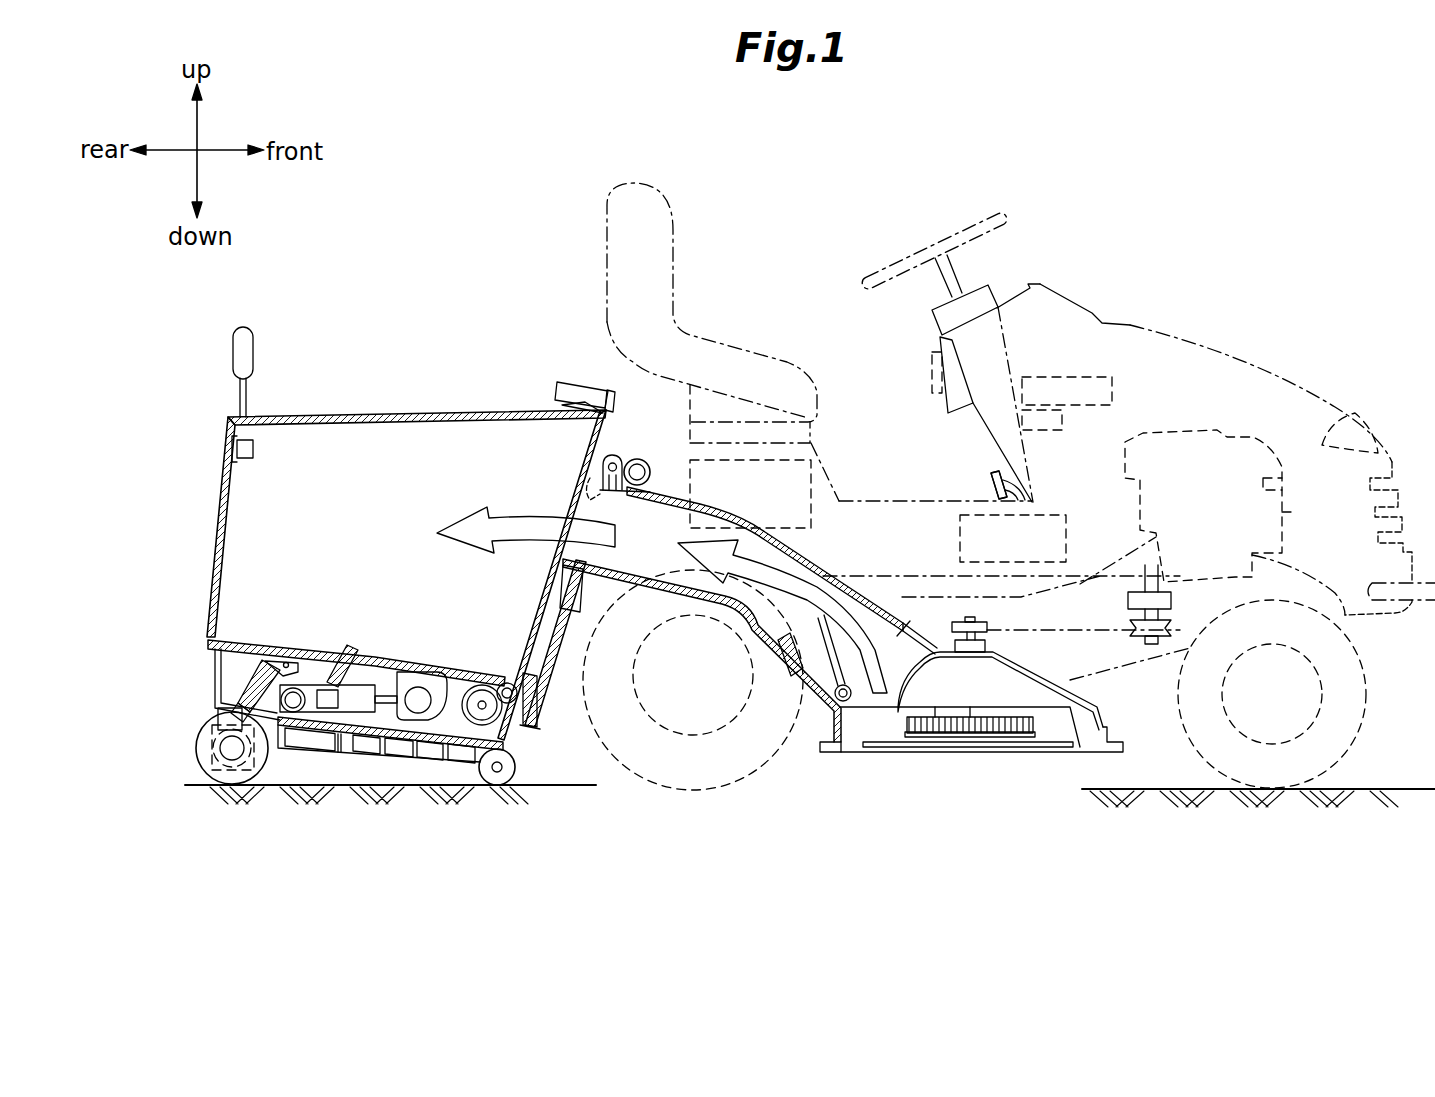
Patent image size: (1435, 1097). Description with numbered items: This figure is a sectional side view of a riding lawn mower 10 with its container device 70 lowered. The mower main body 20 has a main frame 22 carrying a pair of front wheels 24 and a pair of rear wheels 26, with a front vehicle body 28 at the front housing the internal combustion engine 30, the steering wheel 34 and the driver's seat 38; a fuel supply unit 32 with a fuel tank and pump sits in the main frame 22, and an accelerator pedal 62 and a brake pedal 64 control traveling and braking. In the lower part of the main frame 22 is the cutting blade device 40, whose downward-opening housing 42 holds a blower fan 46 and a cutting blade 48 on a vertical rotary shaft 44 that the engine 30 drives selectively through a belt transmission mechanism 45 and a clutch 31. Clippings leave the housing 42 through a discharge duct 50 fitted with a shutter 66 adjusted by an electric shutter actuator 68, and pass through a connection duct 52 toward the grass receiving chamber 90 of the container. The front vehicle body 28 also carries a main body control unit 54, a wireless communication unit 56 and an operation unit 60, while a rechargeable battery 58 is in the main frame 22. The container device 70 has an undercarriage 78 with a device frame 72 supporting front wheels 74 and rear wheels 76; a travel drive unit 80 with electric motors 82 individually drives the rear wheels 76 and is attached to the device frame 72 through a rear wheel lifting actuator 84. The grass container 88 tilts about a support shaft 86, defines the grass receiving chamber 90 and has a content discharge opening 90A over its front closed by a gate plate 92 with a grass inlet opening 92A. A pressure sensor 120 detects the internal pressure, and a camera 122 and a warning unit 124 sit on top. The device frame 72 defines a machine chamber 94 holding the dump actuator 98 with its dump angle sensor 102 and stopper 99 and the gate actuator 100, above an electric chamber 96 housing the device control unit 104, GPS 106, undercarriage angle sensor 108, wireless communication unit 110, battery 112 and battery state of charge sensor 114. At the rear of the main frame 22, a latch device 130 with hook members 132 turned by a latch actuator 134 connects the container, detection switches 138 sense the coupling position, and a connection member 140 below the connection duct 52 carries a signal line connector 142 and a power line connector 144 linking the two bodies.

The riding lawn mower 10 is at (1180, 208).
The mower main body 20 is at (1009, 530).
The main frame 22 is at (852, 500).
The front wheels 24 is at (1368, 683).
The rear wheels 26 is at (693, 724).
The front vehicle body 28 is at (1095, 312).
The internal combustion engine 30 is at (1288, 512).
The clutch 31 is at (1172, 601).
The fuel supply unit 32 is at (812, 508).
The steering wheel 34 is at (1003, 233).
The driver's seat 38 is at (787, 360).
The cutting blade device 40 is at (1005, 676).
The housing 42 is at (1096, 703).
The rotary shaft 44 is at (966, 636).
The belt transmission mechanism 45 is at (1092, 628).
The blower fan 46 is at (992, 752).
The cutting blade 48 is at (1045, 752).
The discharge duct 50 is at (958, 624).
The connection duct 52 is at (693, 675).
The main body control unit 54 is at (1060, 377).
The wireless communication unit 56 is at (1062, 423).
The rechargeable battery 58 is at (1053, 515).
The operation unit 60 is at (925, 370).
The accelerator pedal 62 is at (987, 480).
The brake pedal 64 is at (999, 485).
The shutter 66 is at (818, 640).
The electric shutter actuator 68 is at (845, 702).
The container device 70 is at (405, 509).
The device frame 72 is at (260, 662).
The front wheels 74 is at (504, 780).
The rear wheels 76 is at (240, 790).
The undercarriage 78 is at (214, 706).
The travel drive unit 80 is at (216, 746).
The electric motors 82 is at (222, 760).
The rear wheel lifting actuator 84 is at (225, 690).
The support shaft 86 is at (482, 690).
The grass container 88 is at (345, 414).
The grass receiving chamber 90 is at (495, 530).
The content discharge opening 90A is at (597, 422).
The gate plate 92 is at (548, 610).
The grass inlet opening 92A is at (578, 588).
The machine chamber 94 is at (297, 688).
The electric chamber 96 is at (424, 786).
The dump actuator 98 is at (372, 690).
The stopper 99 is at (327, 693).
The gate actuator 100 is at (428, 687).
The dump angle sensor 102 is at (340, 655).
The device control unit 104 is at (362, 782).
The GPS 106 is at (393, 787).
The undercarriage angle sensor 108 is at (434, 786).
The wireless communication unit 110 is at (462, 790).
The rechargeable battery 112 is at (300, 752).
The battery state of charge sensor 114 is at (338, 767).
The pressure sensor 120 is at (256, 452).
The camera 122 is at (566, 385).
The warning unit 124 is at (238, 334).
The latch device 130 is at (642, 446).
The hook members 132 is at (635, 490).
The latch actuator 134 is at (650, 455).
The detection switches 138 is at (614, 458).
The connection member 140 is at (633, 690).
The signal line connector 142 is at (528, 710).
The power line connector 144 is at (538, 748).